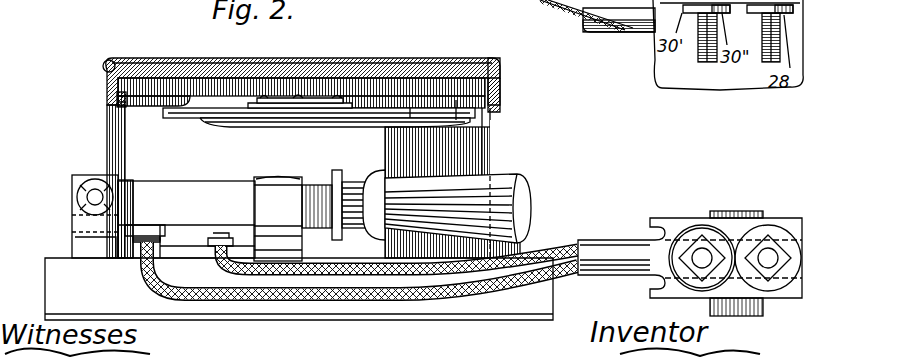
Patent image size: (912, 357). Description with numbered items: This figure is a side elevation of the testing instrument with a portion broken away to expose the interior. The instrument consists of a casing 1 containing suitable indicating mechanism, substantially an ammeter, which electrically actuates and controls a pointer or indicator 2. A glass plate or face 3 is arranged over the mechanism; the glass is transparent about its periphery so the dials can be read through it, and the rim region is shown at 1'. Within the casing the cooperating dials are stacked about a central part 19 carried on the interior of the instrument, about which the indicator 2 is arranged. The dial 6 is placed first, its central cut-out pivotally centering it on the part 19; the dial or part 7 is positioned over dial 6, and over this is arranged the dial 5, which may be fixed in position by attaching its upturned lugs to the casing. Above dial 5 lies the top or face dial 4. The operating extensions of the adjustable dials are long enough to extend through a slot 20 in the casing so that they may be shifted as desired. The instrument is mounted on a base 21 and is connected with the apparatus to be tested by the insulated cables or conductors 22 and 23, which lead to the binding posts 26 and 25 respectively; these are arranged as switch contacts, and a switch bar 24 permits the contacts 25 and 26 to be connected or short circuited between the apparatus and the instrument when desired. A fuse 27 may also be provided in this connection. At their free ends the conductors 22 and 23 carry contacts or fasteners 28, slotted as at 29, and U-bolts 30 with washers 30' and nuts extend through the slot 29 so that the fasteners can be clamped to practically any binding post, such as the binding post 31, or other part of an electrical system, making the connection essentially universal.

The casing 1 is at (105, 181).
The lid rim 1' is at (511, 72).
The pointer or indicator 2 is at (305, 98).
The glass plate or face 3 is at (156, 75).
The top or face dial 4 is at (406, 104).
The dial 5 is at (500, 89).
The dial 6 is at (441, 105).
The dial or part 7 is at (492, 128).
The part 19 is at (353, 108).
The slot 20 is at (118, 112).
The base 21 is at (45, 262).
The conductor 22 is at (226, 240).
The conductor 23 is at (213, 300).
The switch bar 24 is at (202, 184).
The binding post 25 is at (72, 190).
The binding post 26 is at (289, 179).
The fuse 27 is at (133, 232).
The contact 28 is at (788, 222).
The slot 29 is at (794, 283).
The U-bolt 30 is at (694, 274).
The washer 30' is at (702, 240).
The binding post 31 is at (735, 206).